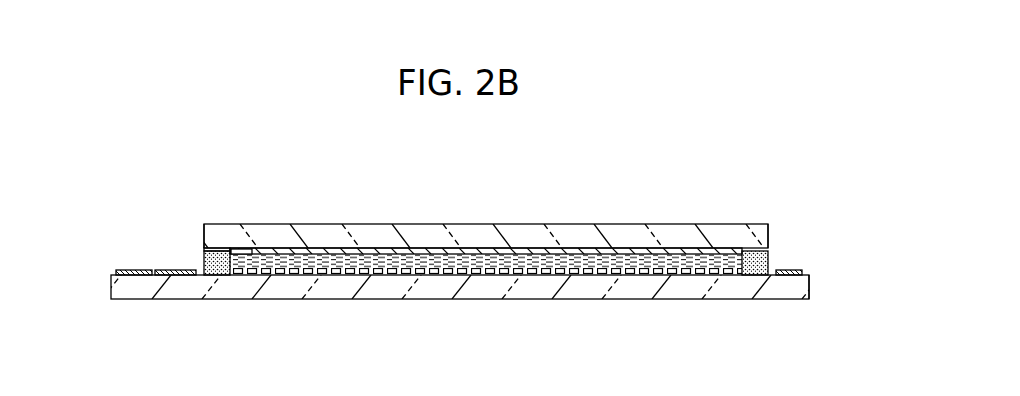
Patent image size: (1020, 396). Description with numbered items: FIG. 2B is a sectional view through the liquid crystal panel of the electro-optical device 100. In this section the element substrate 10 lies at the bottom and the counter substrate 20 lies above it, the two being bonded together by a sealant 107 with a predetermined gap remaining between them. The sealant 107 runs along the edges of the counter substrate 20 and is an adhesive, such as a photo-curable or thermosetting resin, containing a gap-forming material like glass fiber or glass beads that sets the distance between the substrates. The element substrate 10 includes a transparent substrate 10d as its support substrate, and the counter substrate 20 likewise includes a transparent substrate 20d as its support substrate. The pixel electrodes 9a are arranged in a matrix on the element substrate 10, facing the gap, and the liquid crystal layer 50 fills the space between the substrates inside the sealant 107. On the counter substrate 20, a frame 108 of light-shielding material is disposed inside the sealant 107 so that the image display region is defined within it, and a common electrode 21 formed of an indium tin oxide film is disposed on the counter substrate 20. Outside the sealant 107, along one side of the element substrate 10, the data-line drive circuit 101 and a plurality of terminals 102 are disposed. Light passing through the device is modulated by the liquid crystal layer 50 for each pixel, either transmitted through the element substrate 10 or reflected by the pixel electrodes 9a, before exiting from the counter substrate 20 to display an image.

The electro-optical device 100 is at (712, 140).
The element substrate 10 is at (775, 304).
The transparent substrate 10d is at (809, 280).
The counter substrate 20 is at (723, 211).
The transparent substrate 20d is at (762, 234).
The common electrode 21 is at (377, 248).
The liquid crystal layer 50 is at (580, 259).
The pixel electrodes 9a is at (402, 275).
The sealant 107 is at (215, 273).
The frame 108 is at (240, 248).
The data-line drive circuit 101 is at (173, 269).
The terminals 102 is at (133, 269).